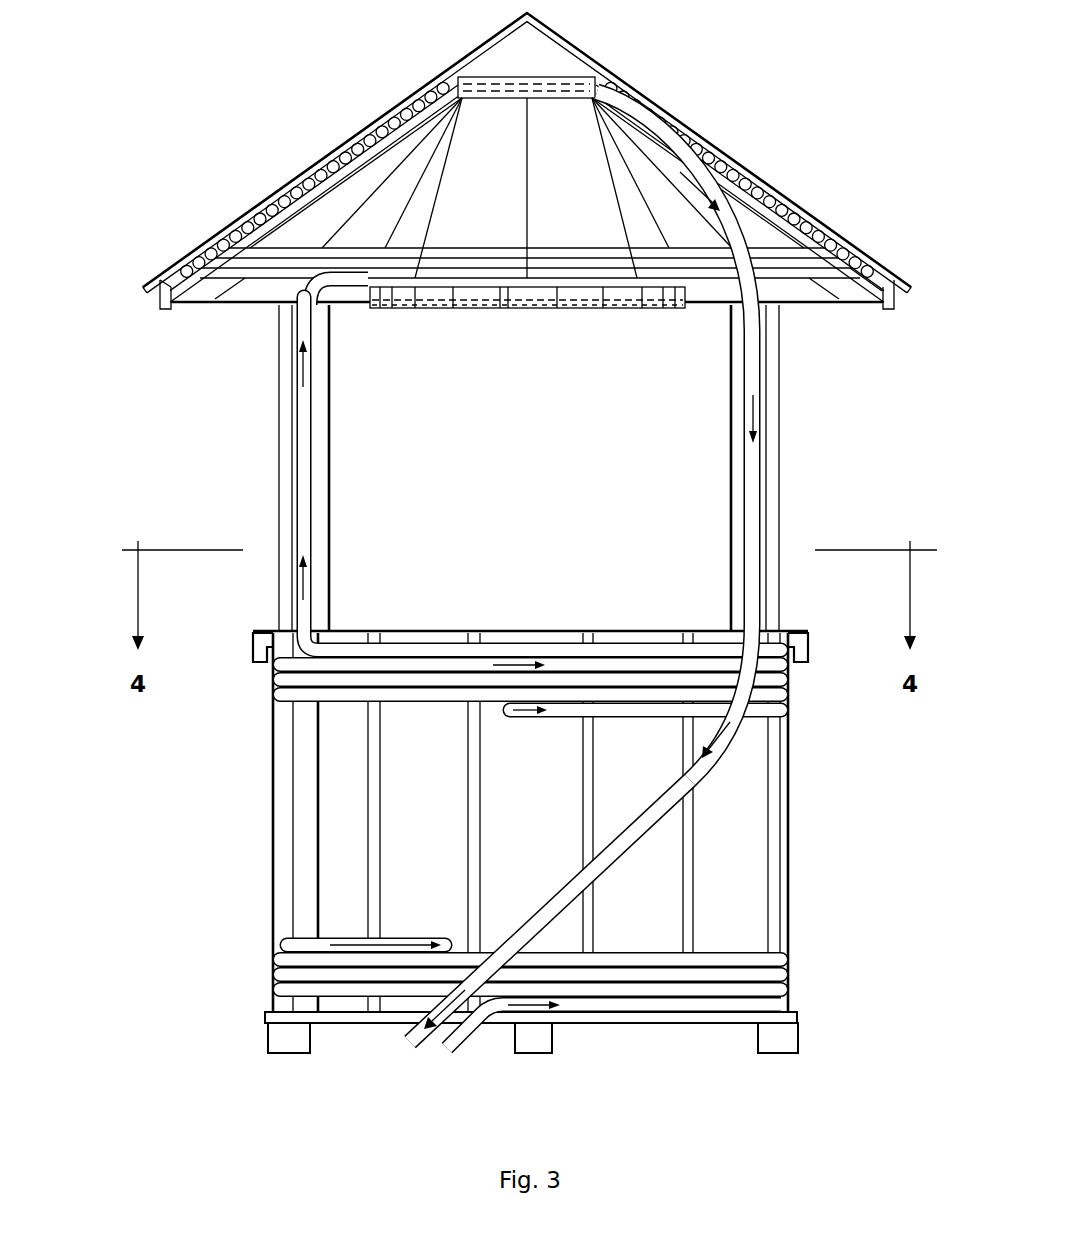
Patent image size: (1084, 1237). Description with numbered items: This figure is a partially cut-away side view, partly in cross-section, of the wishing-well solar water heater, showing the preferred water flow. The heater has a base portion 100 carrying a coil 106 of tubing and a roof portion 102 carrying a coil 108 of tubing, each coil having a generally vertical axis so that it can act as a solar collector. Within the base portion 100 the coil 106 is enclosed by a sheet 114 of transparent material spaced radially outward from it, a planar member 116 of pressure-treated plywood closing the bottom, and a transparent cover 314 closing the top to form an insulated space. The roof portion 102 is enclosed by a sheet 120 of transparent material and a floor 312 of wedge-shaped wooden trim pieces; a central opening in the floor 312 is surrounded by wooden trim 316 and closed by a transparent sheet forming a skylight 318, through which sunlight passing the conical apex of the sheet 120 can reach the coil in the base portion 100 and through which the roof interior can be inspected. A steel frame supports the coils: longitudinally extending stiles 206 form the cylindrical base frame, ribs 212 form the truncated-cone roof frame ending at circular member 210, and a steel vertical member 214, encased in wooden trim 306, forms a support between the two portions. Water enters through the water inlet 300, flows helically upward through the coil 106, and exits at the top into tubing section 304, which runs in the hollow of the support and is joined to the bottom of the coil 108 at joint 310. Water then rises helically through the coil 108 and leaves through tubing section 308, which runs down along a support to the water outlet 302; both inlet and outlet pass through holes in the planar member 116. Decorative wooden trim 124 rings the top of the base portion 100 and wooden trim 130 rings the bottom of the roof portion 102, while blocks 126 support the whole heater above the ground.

The base portion 100 is at (501, 870).
The roof portion 102 is at (352, 98).
The coil 106 is at (790, 708).
The coil 108 is at (728, 152).
The sheet of transparent material 114 is at (273, 825).
The planar member 116 is at (783, 1017).
The sheet of transparent material 120 is at (493, 40).
The wooden trim 124 is at (803, 645).
The blocks 126 is at (287, 1045).
The wooden trim 130 is at (157, 297).
The stiles 206 is at (463, 767).
The circular member 210 is at (594, 76).
The ribs 212 is at (530, 188).
The vertical member 214 is at (305, 894).
The water inlet 300 is at (464, 1035).
The water outlet 302 is at (404, 1028).
The tubing section 304 is at (305, 513).
The wooden trim 306 is at (283, 471).
The tubing section 308 is at (755, 512).
The joint 310 is at (342, 303).
The floor 312 is at (246, 310).
The cover 314 is at (540, 628).
The wooden trim 316 is at (582, 310).
The skylight 318 is at (507, 315).